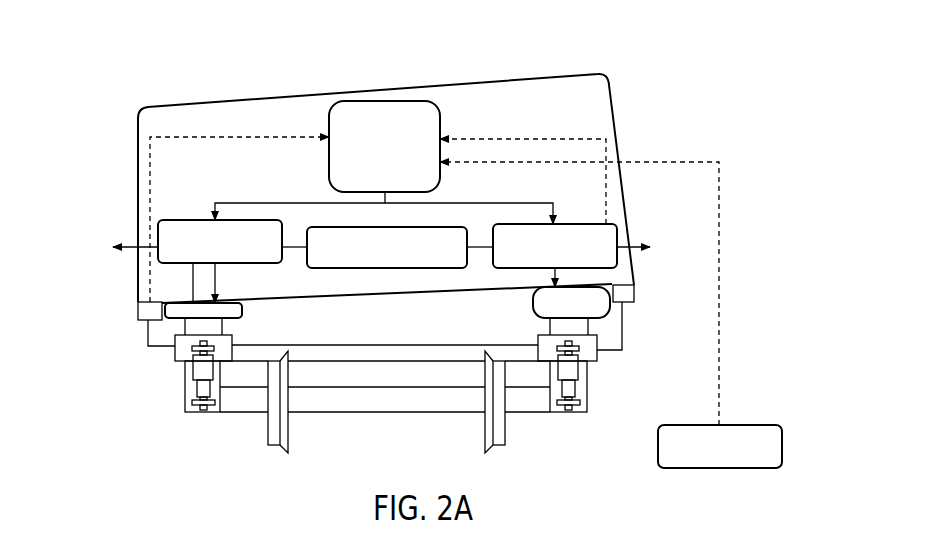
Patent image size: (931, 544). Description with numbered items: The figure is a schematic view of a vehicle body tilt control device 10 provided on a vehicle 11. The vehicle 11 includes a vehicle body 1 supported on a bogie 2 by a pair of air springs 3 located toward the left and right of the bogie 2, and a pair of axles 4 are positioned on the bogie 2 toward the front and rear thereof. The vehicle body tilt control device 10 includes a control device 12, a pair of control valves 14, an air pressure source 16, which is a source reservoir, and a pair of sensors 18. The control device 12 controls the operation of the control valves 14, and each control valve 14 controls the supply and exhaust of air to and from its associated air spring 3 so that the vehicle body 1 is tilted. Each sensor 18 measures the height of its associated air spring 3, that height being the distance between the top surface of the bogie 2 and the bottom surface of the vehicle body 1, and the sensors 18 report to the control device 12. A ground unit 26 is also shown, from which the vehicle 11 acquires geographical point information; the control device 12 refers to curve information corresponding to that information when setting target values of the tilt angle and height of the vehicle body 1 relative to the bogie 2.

The vehicle body 1 is at (183, 103).
The vehicle body tilt control device 10 is at (318, 106).
The vehicle 11 is at (616, 66).
The control device 12 is at (385, 101).
The control valve 14 is at (158, 221).
The air pressure source 16 is at (459, 227).
The sensor 18 is at (138, 316).
The air spring 3 is at (242, 312).
The bogie 2 is at (348, 357).
The axle 4 is at (437, 406).
The ground unit 26 is at (762, 425).